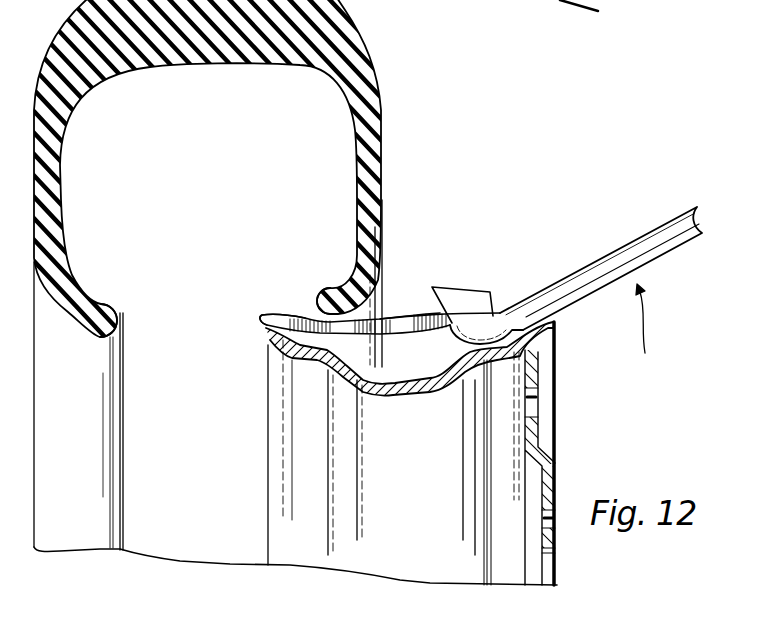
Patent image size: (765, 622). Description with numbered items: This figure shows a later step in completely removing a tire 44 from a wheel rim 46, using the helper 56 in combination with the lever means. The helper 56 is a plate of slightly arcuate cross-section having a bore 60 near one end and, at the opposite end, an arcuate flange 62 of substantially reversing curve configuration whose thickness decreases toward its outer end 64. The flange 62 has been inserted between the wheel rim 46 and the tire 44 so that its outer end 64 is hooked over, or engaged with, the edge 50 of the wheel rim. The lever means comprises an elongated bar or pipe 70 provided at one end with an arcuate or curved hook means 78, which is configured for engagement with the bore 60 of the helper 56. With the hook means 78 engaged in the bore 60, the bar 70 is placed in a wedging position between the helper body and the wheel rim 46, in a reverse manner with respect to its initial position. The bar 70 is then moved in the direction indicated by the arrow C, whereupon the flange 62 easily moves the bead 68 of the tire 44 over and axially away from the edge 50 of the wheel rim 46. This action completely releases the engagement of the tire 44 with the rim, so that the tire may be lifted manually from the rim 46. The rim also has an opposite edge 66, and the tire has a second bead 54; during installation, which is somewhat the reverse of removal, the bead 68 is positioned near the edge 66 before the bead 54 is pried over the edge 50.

The tire 44 is at (373, 97).
The bead 54 is at (117, 306).
The bead 68 is at (312, 286).
The arcuate flange 62 is at (288, 313).
The outer end 64 is at (260, 318).
The hook means 78 is at (448, 287).
The bore 60 is at (470, 314).
The bar 70 is at (605, 257).
The helper 56 is at (396, 308).
The edge 50 is at (258, 331).
The wheel rim 46 is at (556, 481).
The edge 66 is at (553, 322).
The arrow C is at (651, 312).